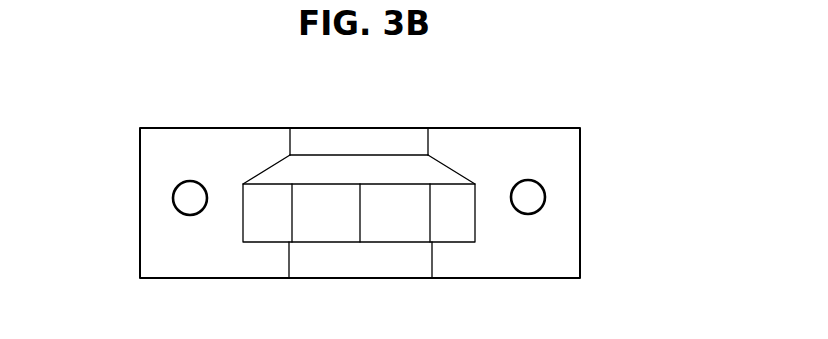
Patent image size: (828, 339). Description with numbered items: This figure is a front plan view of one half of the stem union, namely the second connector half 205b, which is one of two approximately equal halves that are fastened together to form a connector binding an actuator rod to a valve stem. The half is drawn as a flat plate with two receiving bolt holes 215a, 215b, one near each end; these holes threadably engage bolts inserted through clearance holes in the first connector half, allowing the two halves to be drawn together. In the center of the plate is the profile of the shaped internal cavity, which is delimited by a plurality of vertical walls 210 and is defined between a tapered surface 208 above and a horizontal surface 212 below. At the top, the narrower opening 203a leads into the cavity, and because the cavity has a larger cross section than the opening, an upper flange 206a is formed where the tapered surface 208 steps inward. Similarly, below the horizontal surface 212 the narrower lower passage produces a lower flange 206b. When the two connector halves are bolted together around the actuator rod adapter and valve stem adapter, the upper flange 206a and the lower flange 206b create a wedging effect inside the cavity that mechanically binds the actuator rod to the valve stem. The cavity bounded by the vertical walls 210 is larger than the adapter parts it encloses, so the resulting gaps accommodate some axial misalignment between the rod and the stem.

The opening 203a is at (315, 148).
The upper flange 206a is at (363, 140).
The tapered surface 208 is at (438, 160).
The second connector half 205b is at (140, 182).
The receiving bolt hole 215b is at (192, 206).
The receiving bolt hole 215a is at (534, 188).
The lower flange 206b is at (300, 273).
The vertical walls 210 is at (285, 222).
The horizontal surface 212 is at (453, 242).